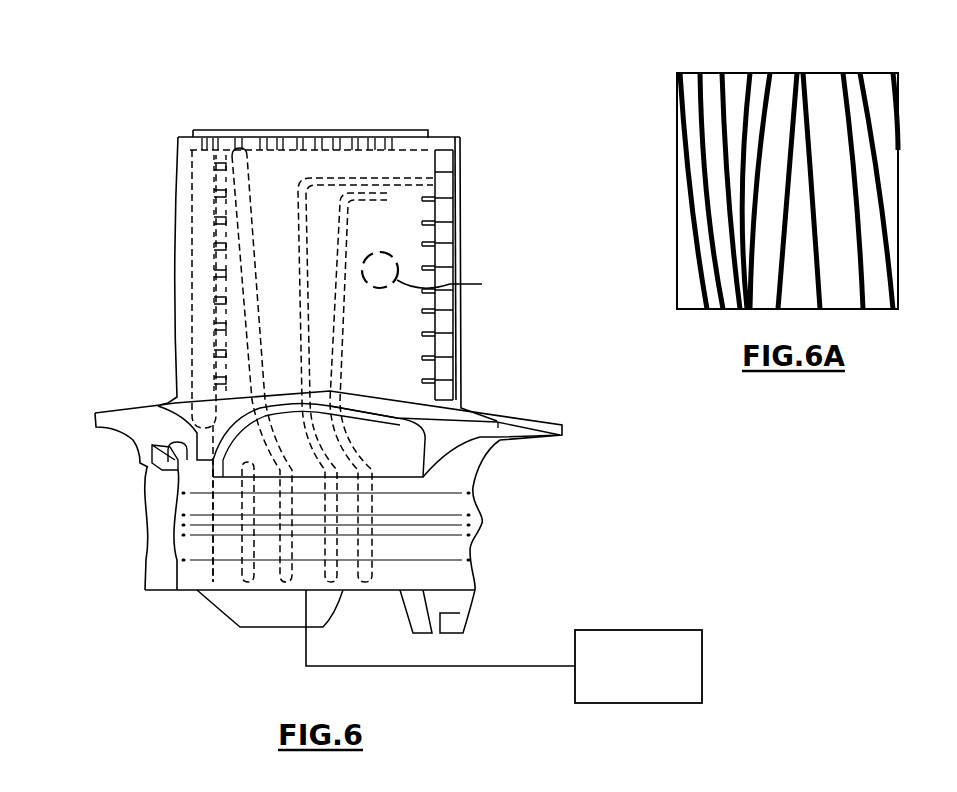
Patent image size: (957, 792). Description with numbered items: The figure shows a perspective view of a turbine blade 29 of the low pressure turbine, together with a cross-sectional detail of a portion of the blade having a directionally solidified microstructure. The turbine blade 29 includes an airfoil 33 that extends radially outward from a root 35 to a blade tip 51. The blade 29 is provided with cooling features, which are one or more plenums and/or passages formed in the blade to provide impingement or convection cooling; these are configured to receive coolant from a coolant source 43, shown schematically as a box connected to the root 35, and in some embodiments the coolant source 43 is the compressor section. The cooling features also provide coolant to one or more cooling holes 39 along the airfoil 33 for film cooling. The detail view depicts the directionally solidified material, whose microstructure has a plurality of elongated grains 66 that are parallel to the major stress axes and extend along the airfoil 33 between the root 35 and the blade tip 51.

In FIG. 6, the turbine blade 29 is at (470, 104).
In FIG. 6, the airfoil 33 is at (166, 214).
In FIG. 6, the root 35 is at (106, 502).
In FIG. 6, the cooling holes 39 is at (450, 200).
In FIG. 6, the coolant source 43 is at (654, 678).
In FIG. 6, the blade tip 51 is at (228, 130).
In FIG. 6A, the elongated grains 66 is at (823, 95).